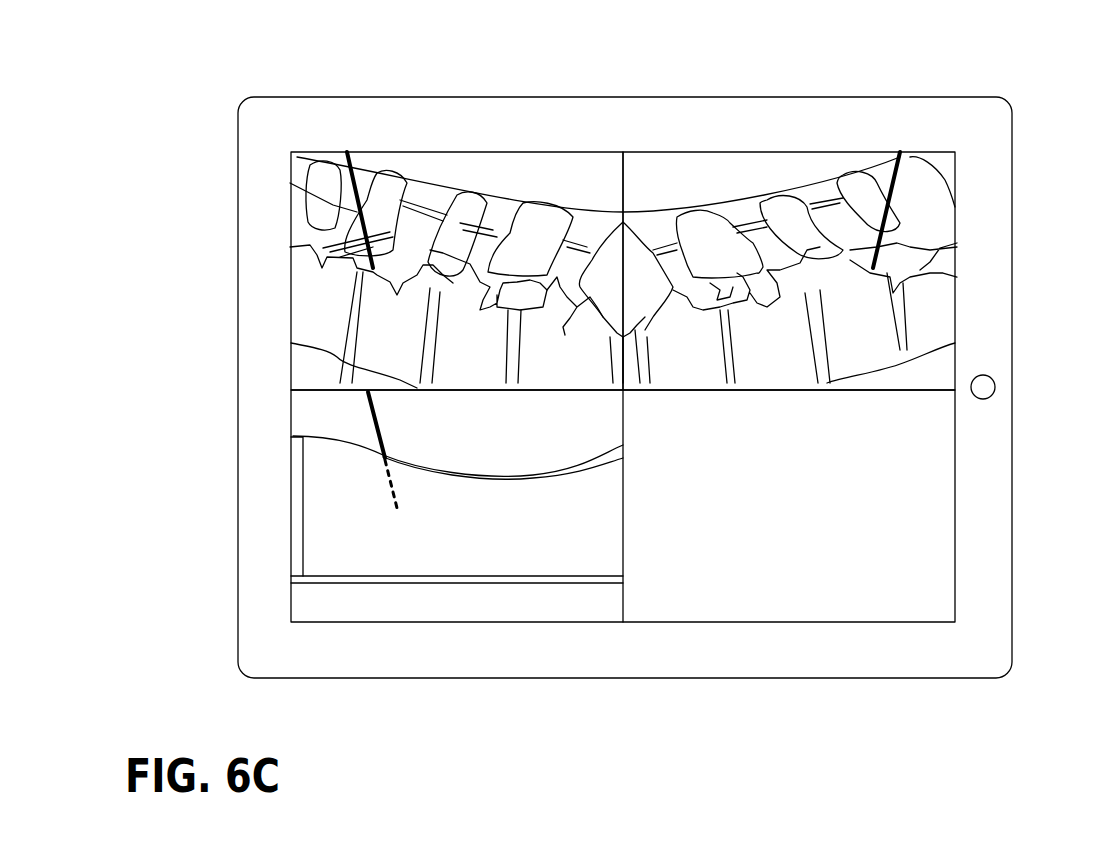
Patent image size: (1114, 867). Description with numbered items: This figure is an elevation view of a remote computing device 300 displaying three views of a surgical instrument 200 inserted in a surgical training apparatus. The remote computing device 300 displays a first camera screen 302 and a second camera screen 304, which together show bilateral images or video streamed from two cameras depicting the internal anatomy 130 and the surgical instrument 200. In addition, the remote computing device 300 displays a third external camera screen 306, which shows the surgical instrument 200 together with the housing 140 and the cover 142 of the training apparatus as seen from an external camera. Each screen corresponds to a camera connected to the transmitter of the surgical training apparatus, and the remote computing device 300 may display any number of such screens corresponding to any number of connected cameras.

The remote computing device 300 is at (313, 96).
The first camera screen 302 is at (575, 182).
The second camera screen 304 is at (727, 178).
The third external camera screen 306 is at (510, 605).
The internal anatomy 130 is at (323, 197).
The housing 140 is at (333, 532).
The cover 142 is at (363, 447).
The surgical instrument 200 is at (367, 193).